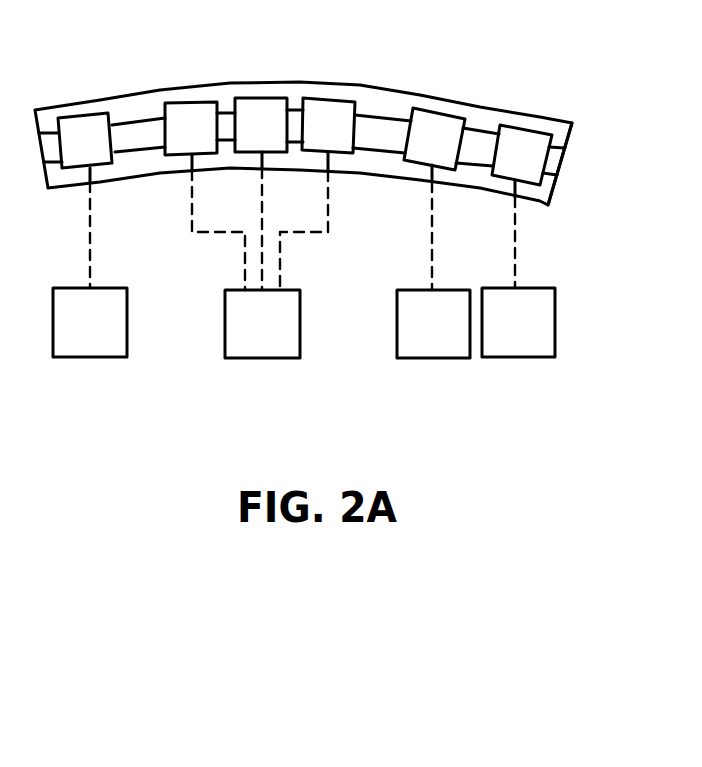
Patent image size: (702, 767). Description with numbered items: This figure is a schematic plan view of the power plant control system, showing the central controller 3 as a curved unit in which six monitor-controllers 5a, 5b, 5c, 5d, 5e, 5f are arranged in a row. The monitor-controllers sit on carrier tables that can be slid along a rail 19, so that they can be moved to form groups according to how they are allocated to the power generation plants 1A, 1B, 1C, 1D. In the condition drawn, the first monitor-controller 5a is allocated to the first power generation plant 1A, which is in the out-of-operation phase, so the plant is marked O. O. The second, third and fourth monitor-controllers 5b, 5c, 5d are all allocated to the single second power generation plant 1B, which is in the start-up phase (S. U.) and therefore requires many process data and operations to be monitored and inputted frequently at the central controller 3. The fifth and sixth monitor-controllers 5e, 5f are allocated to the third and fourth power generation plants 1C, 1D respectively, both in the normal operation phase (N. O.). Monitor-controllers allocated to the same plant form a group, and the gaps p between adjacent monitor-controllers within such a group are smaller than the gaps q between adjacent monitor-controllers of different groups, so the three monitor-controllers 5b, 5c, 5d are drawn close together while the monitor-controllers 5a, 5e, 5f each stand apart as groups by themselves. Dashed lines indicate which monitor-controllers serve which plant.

The central controller 3 is at (569, 81).
The first monitor-controller 5a is at (88, 116).
The second monitor-controller 5b is at (190, 102).
The third monitor-controller 5c is at (262, 97).
The fourth monitor-controller 5d is at (330, 97).
The fifth monitor-controller 5e is at (440, 107).
The sixth monitor-controller 5f is at (528, 127).
The gap between adjacent monitor-controllers within the same group p is at (225, 100).
The gap between adjacent monitor-controllers of different groups q is at (140, 97).
The rail 19 is at (557, 173).
The first power generation plant 1A is at (80, 358).
The second power generation plant 1B is at (252, 358).
The third power generation plant 1C is at (428, 358).
The fourth power generation plant 1D is at (518, 357).